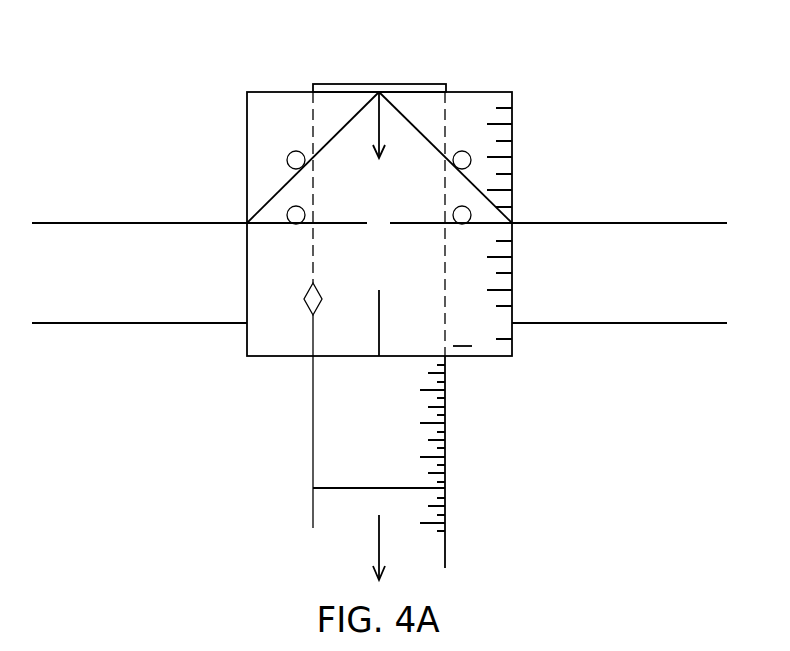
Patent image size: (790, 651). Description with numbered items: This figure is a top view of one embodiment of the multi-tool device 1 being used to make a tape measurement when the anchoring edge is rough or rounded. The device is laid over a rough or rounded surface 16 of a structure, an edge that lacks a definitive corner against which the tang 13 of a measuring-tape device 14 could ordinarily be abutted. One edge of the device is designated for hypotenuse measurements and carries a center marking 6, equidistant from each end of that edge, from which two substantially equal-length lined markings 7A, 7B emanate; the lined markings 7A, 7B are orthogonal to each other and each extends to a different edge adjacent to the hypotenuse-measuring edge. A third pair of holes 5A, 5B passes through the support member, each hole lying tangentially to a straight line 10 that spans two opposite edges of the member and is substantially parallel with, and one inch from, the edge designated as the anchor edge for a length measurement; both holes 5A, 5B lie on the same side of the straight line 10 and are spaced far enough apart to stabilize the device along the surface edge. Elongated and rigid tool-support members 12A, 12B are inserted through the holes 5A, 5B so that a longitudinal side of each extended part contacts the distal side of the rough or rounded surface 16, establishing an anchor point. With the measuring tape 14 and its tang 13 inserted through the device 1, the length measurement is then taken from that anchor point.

The multi-tool device 1 is at (190, 80).
The center marking 6 is at (379, 90).
The tang 13 is at (428, 87).
The lined marking 7A is at (322, 135).
The lined marking 7B is at (440, 138).
The hole of third pair of holes 5A is at (220, 203).
The tool-support member 12A is at (296, 215).
The hole of third pair of holes 5B is at (540, 203).
The tool-support member 12B is at (462, 215).
The rough or rounded surface 16 is at (653, 244).
The straight line 10 is at (423, 225).
The measuring-tape device 14 is at (423, 467).